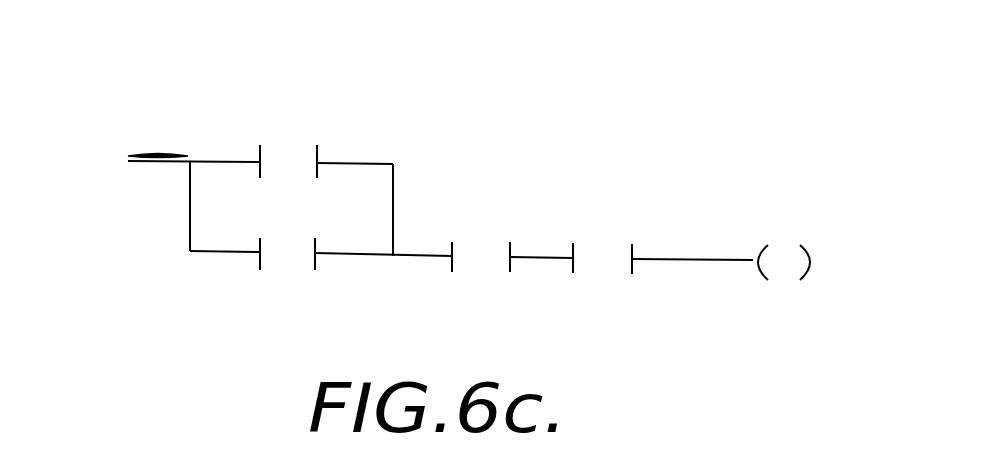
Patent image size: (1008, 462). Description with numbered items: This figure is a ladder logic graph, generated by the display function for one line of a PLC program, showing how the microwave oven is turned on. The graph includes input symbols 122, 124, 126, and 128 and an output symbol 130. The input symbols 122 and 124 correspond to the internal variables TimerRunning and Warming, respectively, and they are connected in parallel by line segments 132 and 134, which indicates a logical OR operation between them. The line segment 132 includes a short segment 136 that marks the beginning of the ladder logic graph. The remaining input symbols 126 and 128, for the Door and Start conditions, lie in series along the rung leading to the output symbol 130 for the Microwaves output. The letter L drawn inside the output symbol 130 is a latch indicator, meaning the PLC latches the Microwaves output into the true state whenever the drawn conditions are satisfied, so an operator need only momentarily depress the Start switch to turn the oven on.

The input symbol 122 is at (272, 100).
The input symbol 124 is at (284, 267).
The input symbol 126 is at (485, 272).
The input symbol 128 is at (607, 274).
The output symbol 130 is at (774, 282).
The line segment 132 is at (190, 184).
The line segment 134 is at (394, 192).
The segment 136 is at (158, 153).